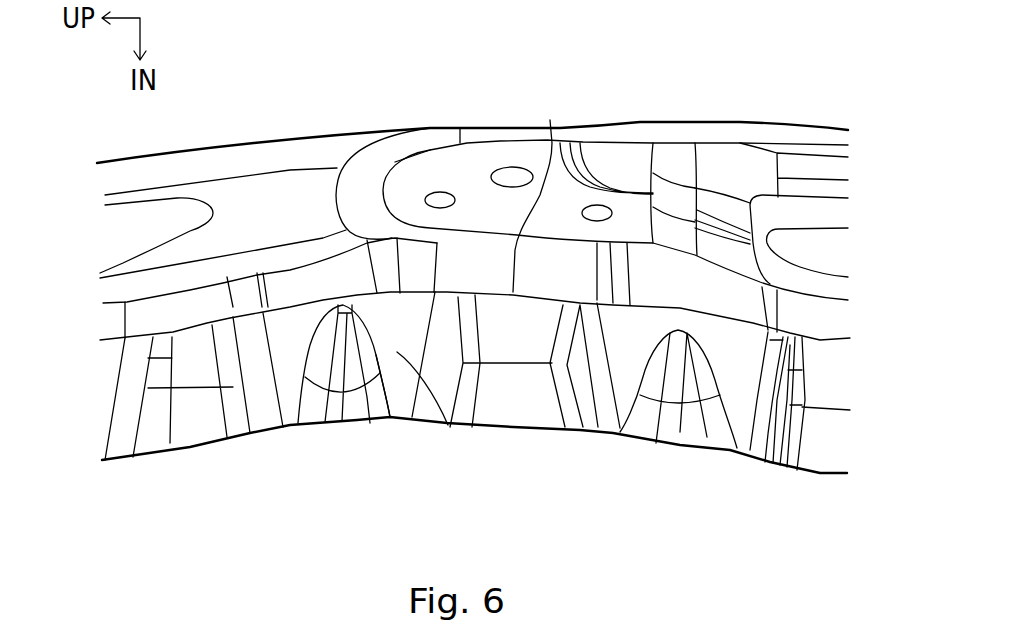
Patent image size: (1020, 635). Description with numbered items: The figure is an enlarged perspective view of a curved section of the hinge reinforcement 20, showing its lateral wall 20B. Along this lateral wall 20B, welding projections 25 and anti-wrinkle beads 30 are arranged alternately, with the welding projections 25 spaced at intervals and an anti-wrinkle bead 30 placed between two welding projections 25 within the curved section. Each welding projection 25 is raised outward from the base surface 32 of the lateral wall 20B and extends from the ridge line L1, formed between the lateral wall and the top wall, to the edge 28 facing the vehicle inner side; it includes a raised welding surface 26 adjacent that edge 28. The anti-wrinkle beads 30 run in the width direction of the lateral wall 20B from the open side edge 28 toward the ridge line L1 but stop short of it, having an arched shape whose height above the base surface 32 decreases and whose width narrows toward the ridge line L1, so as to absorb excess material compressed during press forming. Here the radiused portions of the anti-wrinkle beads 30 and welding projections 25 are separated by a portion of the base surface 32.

The hinge reinforcement 20 is at (728, 76).
The lateral wall 20B is at (90, 439).
The welding projection 25 is at (496, 428).
The raised welding surface 26 is at (198, 422).
The edge 28 is at (380, 420).
The anti-wrinkle bead 30 is at (345, 420).
The base surface 32 is at (448, 425).
The ridge line L1 is at (550, 120).